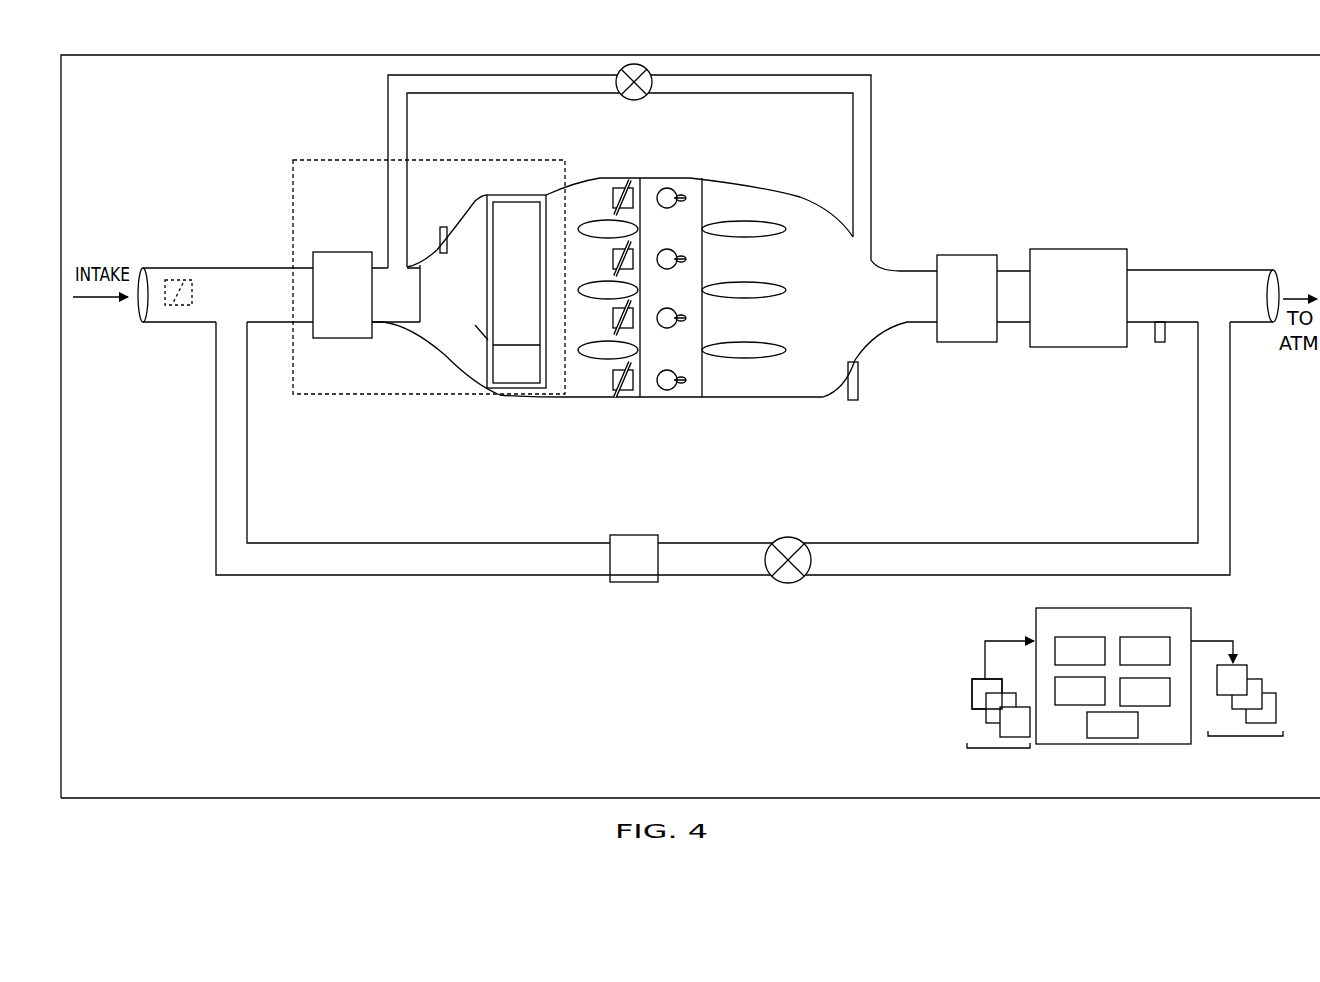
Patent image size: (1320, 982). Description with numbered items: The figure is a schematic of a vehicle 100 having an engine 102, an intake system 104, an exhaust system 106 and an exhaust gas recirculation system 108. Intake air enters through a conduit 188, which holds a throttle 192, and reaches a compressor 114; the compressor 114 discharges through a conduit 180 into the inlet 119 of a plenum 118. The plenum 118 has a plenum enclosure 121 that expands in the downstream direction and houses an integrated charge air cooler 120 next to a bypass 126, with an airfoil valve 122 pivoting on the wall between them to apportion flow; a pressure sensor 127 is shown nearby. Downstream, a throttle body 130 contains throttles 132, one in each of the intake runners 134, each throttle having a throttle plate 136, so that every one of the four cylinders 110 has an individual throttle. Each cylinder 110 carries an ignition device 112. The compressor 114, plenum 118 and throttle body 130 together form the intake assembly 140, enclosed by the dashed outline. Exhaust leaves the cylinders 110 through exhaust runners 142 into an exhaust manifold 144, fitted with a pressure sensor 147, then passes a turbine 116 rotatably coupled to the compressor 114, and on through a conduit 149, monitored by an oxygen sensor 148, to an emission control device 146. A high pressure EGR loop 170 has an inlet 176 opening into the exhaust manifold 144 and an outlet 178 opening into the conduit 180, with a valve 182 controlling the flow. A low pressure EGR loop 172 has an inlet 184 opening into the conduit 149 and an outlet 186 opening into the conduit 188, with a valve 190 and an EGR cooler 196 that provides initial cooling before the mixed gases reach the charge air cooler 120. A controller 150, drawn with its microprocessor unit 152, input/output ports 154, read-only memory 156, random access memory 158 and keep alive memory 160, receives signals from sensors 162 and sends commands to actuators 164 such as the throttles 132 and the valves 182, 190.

The vehicle 100 is at (90, 55).
The engine 102 is at (648, 178).
The intake system 104 is at (250, 182).
The exhaust system 106 is at (1080, 148).
The exhaust gas recirculation system 108 is at (358, 93).
The cylinders 110 is at (662, 252).
The ignition device 112 is at (682, 256).
The compressor 114 is at (342, 295).
The turbine 116 is at (967, 298).
The plenum 118 is at (492, 195).
The inlet 119 is at (395, 270).
The charge air cooler 120 is at (516, 292).
The plenum enclosure 121 is at (457, 298).
The airfoil valve 122 is at (490, 336).
The bypass 126 is at (516, 360).
The pressure sensor 127 is at (444, 227).
The throttle body 130 is at (590, 178).
The throttles 132 is at (632, 184).
The intake runners 134 is at (606, 289).
The throttle plate 136 is at (612, 186).
The intake assembly 140 is at (336, 160).
The exhaust runners 142 is at (744, 289).
The exhaust manifold 144 is at (836, 303).
The emission control device 146 is at (1078, 298).
The pressure sensor 147 is at (858, 372).
The oxygen sensor 148 is at (1155, 328).
The conduit 149 is at (1200, 270).
The controller 150 is at (1113, 676).
The microprocessor unit 152 is at (1080, 651).
The input/output ports 154 is at (1080, 691).
The read-only memory 156 is at (1145, 651).
The random access memory 158 is at (1145, 692).
The keep alive memory 160 is at (1112, 725).
The sensors 162 is at (1000, 718).
The actuators 164 is at (1238, 713).
The high pressure EGR loop 170 is at (872, 104).
The low pressure EGR loop 172 is at (940, 543).
The inlet 176 is at (860, 256).
The outlet 178 is at (418, 312).
The conduit 180 is at (388, 323).
The valve 182 is at (630, 96).
The inlet 184 is at (1215, 318).
The outlet 186 is at (228, 315).
The conduit 188 is at (260, 268).
The valve 190 is at (787, 538).
The throttle 192 is at (180, 270).
The EGR cooler 196 is at (634, 558).